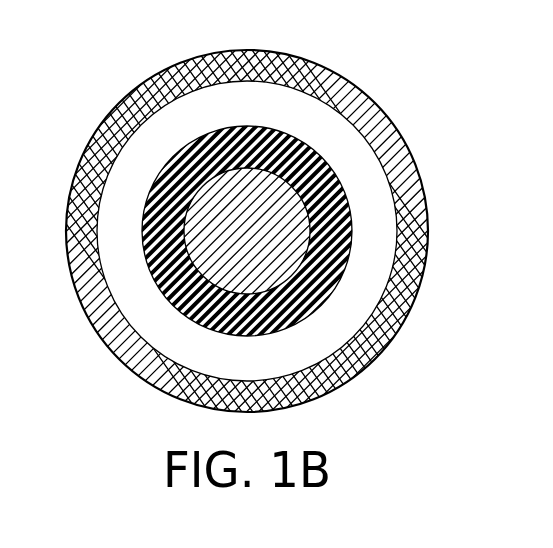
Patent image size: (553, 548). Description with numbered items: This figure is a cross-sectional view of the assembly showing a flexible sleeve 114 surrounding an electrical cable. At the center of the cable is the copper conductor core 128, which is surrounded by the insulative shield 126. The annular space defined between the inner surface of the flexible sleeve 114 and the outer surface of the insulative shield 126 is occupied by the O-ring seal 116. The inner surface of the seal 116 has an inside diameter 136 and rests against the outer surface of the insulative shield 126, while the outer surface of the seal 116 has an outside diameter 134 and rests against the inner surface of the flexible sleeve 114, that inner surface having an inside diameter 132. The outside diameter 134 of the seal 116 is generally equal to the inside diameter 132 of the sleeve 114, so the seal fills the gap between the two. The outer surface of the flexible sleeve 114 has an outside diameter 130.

The flexible sleeve 114 is at (330, 73).
The O-ring seal 116 is at (365, 99).
The insulative shield 126 is at (168, 293).
The copper conductor core 128 is at (210, 223).
The outside diameter 130 is at (430, 250).
The inside diameter 132 is at (393, 288).
The outside diameter 134 is at (384, 183).
The inside diameter 136 is at (382, 251).